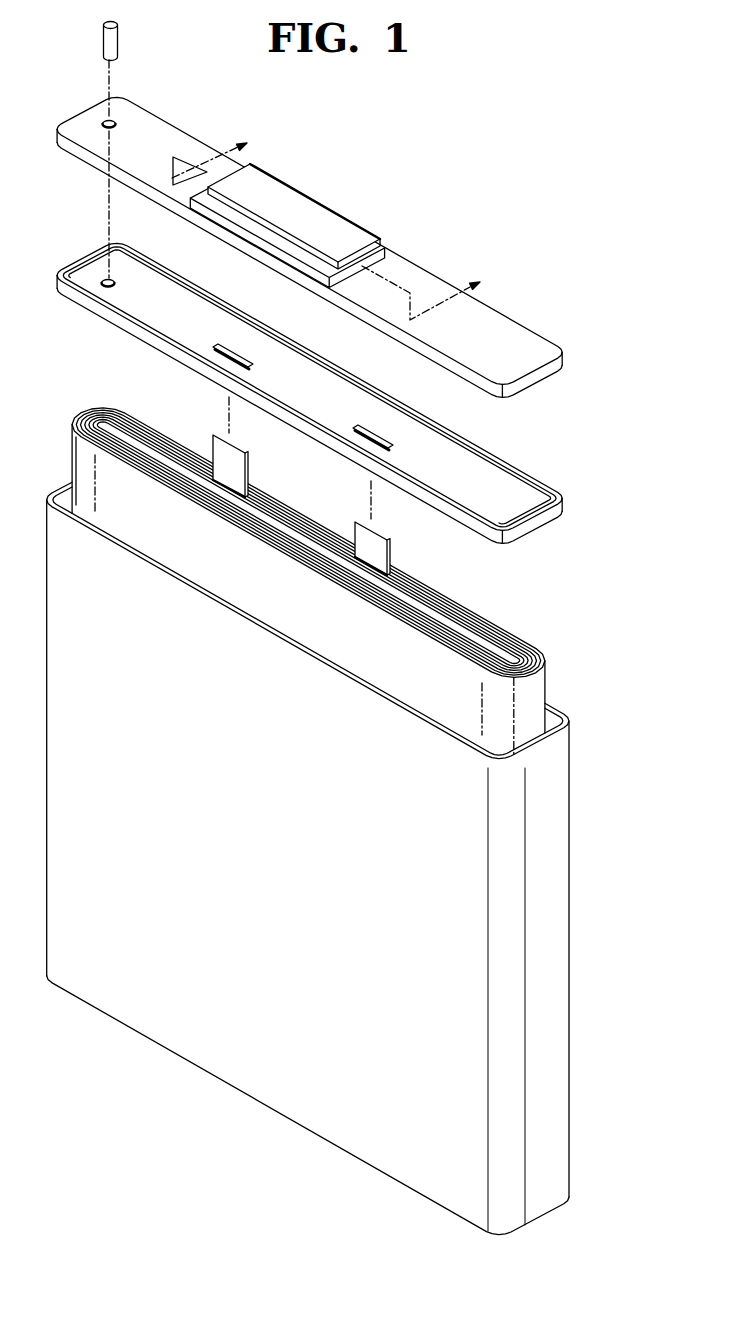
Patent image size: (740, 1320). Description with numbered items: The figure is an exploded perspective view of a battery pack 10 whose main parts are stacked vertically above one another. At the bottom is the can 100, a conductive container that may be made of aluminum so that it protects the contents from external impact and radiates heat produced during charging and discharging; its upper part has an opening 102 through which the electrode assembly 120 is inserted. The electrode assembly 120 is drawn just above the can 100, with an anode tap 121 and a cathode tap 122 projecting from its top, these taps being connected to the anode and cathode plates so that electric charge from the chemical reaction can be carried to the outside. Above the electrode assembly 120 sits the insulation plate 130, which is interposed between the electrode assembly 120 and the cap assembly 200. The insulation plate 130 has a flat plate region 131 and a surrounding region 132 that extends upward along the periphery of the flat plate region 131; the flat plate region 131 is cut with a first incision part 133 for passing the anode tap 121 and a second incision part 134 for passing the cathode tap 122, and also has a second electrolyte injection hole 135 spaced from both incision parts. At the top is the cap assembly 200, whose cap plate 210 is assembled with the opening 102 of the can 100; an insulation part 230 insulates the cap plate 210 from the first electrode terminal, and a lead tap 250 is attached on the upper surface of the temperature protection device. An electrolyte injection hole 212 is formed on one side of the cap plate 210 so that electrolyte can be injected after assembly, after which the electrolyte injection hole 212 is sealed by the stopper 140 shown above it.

The battery pack 10 is at (600, 150).
The can 100 is at (345, 858).
The opening 102 is at (551, 730).
The electrode assembly 120 is at (291, 553).
The anode tap 121 is at (213, 440).
The cathode tap 122 is at (356, 526).
The insulation plate 130 is at (355, 375).
The flat plate region 131 is at (509, 501).
The surrounding region 132 is at (476, 457).
The first incision part 133 is at (238, 352).
The second incision part 134 is at (381, 434).
The second electrolyte injection hole 135 is at (104, 279).
The stopper 140 is at (102, 36).
The cap assembly 200 is at (360, 235).
The cap plate 210 is at (513, 336).
The electrolyte injection hole 212 is at (105, 121).
The insulation part 230 is at (392, 243).
The lead tap 250 is at (313, 213).